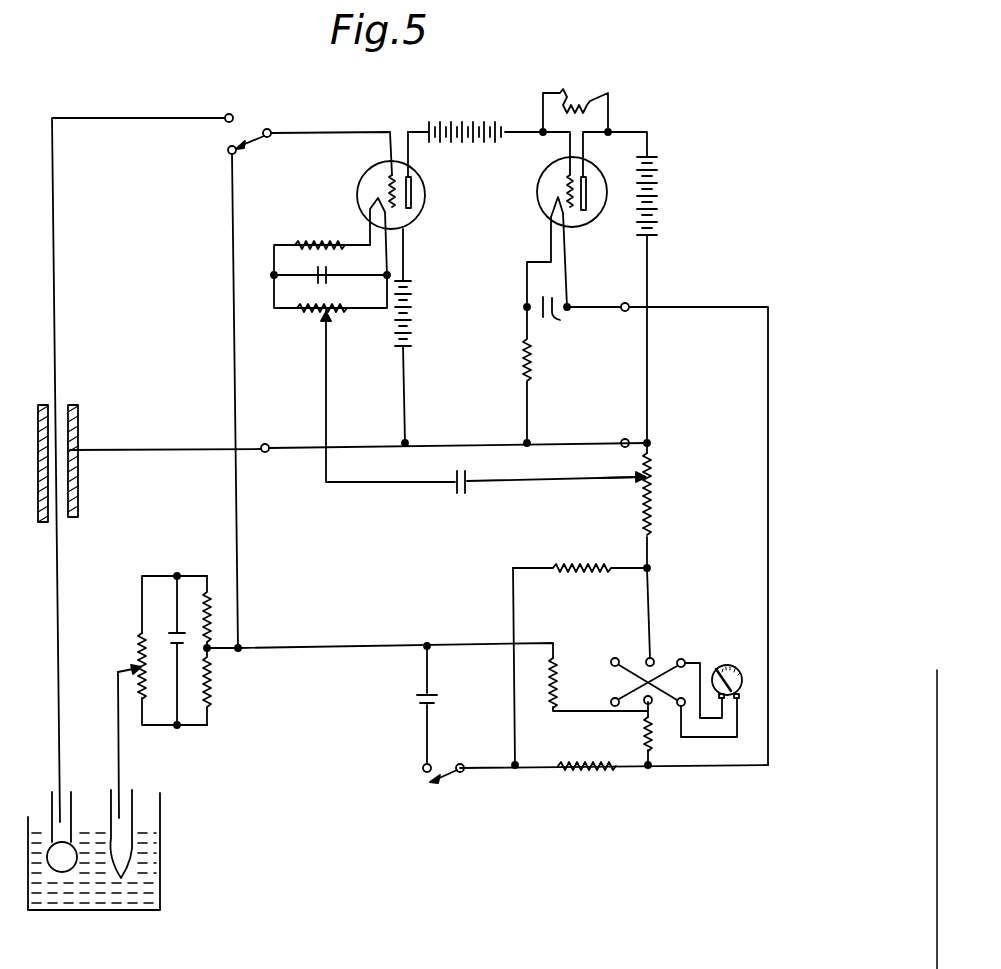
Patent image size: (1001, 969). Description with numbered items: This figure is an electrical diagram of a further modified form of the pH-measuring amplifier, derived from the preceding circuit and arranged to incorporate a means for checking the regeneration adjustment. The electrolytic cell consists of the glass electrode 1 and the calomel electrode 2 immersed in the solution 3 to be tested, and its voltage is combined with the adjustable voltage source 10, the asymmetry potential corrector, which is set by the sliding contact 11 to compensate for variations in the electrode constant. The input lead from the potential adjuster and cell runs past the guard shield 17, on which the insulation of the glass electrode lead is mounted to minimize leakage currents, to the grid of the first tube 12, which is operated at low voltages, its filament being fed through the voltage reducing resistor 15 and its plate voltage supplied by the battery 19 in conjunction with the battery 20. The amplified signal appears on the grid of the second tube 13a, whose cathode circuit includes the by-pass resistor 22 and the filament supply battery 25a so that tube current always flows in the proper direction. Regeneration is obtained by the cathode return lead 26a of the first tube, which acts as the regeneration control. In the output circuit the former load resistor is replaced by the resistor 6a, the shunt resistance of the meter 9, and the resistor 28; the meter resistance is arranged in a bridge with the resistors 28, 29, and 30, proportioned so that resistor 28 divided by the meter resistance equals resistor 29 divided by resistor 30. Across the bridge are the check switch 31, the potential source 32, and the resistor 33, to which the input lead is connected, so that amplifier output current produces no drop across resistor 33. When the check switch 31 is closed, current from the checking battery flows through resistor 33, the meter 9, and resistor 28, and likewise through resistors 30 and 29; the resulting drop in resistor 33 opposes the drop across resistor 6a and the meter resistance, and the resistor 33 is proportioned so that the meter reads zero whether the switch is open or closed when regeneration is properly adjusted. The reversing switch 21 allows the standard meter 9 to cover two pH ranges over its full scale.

The glass electrode 1 is at (48, 800).
The calomel electrode 2 is at (133, 794).
The solution 3 is at (90, 878).
The resistor 6a is at (652, 506).
The meter 9 is at (736, 670).
The adjustable voltage source 10 is at (182, 718).
The sliding contact 11 is at (138, 656).
The tube 12 is at (432, 186).
The tube 13a is at (540, 180).
The voltage reducing resistor 15 is at (311, 243).
The guard shield 17 is at (38, 456).
The battery 19 is at (480, 118).
The battery 20 is at (659, 190).
The reversing switch 21 is at (671, 662).
The resistor 22 is at (535, 362).
The battery 25a is at (571, 316).
The cathode return lead 26a is at (620, 493).
The resistor 28 is at (574, 567).
The resistor 29 is at (578, 776).
The resistor 30 is at (646, 735).
The check switch 31 is at (449, 766).
The potential source 32 is at (430, 697).
The resistor 33 is at (556, 691).